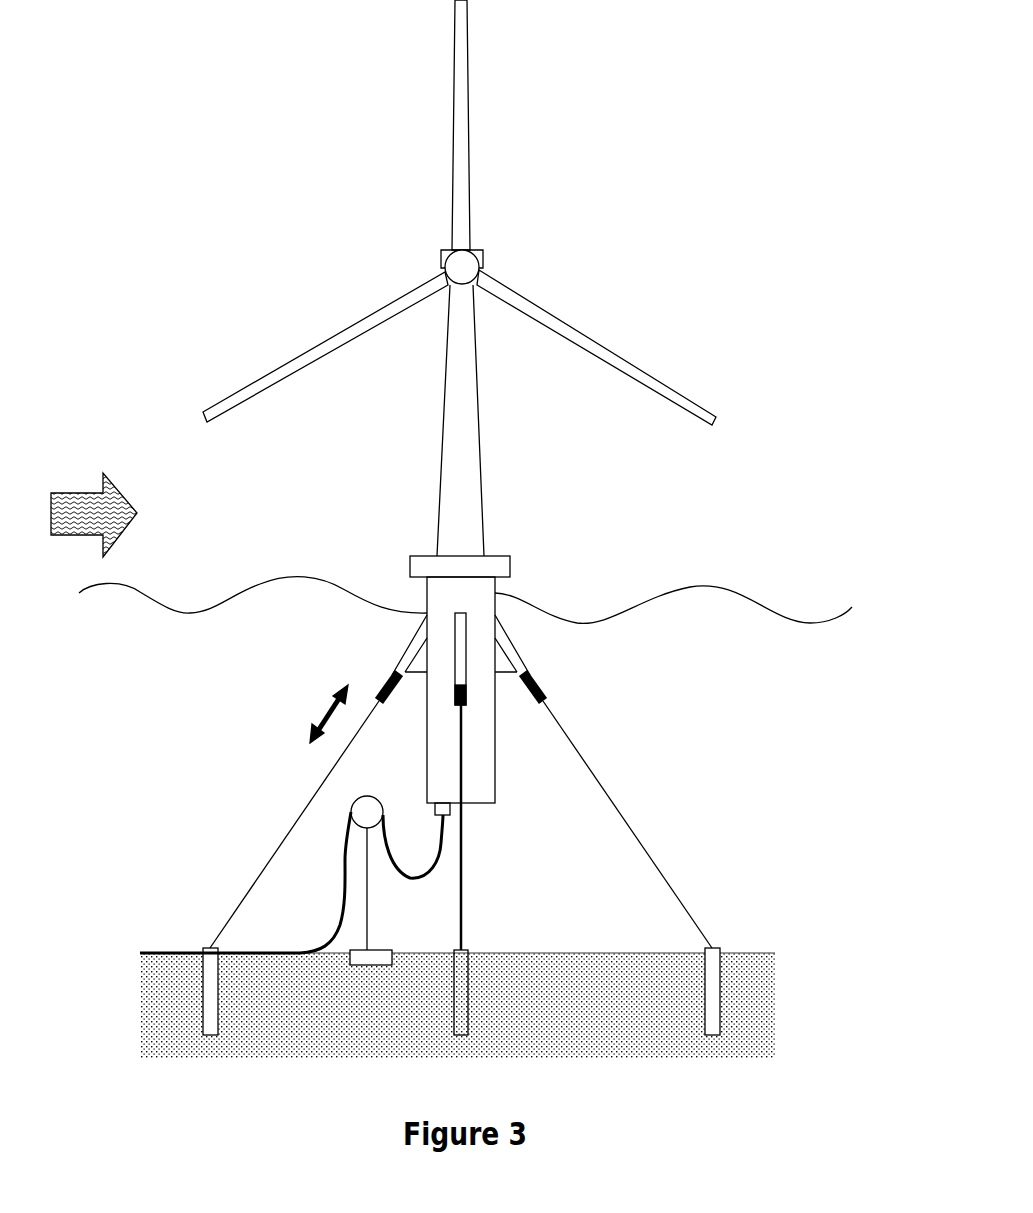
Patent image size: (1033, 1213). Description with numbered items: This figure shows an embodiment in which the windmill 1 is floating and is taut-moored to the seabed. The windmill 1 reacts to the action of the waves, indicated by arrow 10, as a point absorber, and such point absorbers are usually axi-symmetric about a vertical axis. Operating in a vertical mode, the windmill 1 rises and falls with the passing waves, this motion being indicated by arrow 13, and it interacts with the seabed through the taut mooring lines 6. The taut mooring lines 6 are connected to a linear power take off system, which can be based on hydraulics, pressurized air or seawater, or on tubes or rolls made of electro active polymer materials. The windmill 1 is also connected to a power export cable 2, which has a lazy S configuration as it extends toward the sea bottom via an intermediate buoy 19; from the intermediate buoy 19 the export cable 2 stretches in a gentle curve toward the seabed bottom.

The windmill 1 is at (468, 425).
The power export cable 2 is at (267, 950).
The taut mooring lines 6 is at (613, 803).
The arrow indicating waves action 10 is at (94, 507).
The arrow indicating vertical motion 13 is at (321, 714).
The intermediate buoy 19 is at (368, 805).